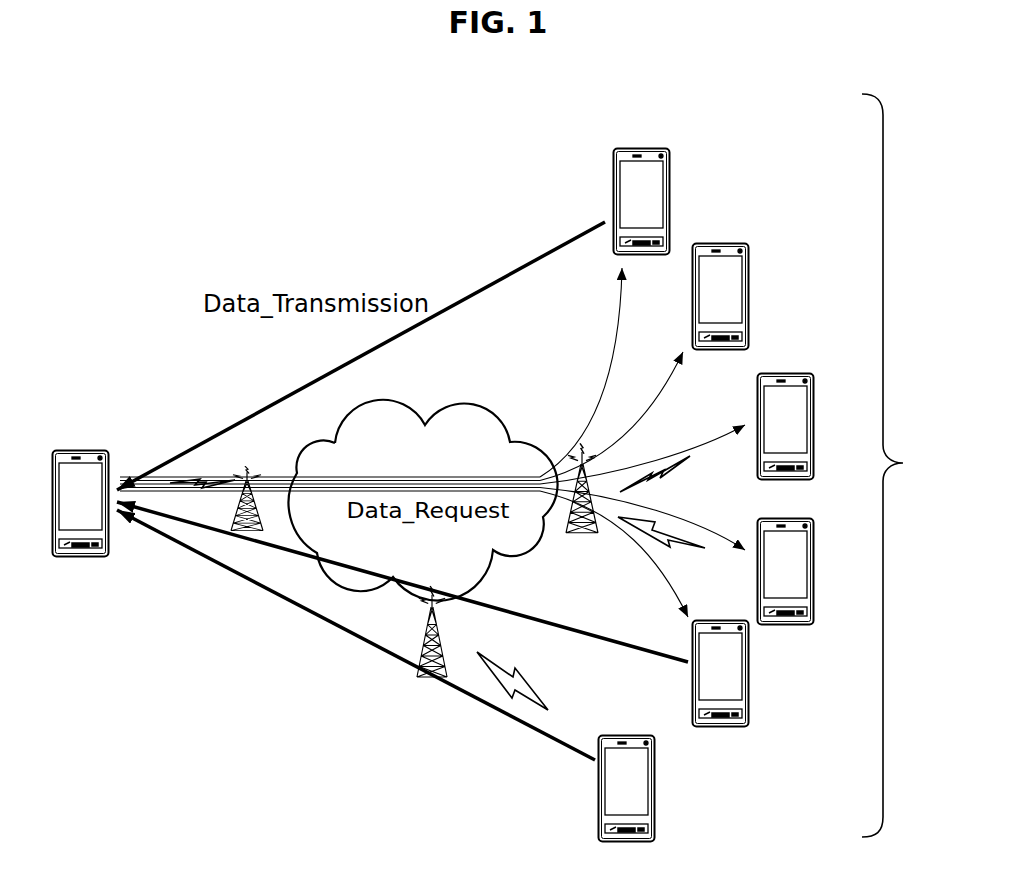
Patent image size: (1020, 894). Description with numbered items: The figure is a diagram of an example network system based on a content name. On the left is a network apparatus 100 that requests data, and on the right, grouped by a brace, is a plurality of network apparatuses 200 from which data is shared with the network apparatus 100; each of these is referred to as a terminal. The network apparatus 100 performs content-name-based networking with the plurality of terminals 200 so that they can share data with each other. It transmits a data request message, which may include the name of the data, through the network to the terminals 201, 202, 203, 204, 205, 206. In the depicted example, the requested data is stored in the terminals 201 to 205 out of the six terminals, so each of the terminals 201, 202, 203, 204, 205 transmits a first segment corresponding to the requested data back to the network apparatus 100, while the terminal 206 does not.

The network apparatus 100 is at (76, 450).
The plurality of network apparatuses 200 is at (908, 465).
The terminal 201 is at (645, 148).
The terminal 202 is at (723, 243).
The terminal 203 is at (785, 373).
The terminal 204 is at (785, 518).
The terminal 205 is at (748, 670).
The terminal 206 is at (653, 783).